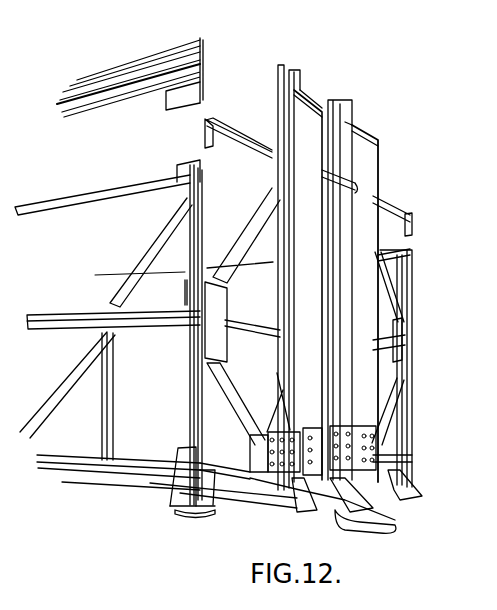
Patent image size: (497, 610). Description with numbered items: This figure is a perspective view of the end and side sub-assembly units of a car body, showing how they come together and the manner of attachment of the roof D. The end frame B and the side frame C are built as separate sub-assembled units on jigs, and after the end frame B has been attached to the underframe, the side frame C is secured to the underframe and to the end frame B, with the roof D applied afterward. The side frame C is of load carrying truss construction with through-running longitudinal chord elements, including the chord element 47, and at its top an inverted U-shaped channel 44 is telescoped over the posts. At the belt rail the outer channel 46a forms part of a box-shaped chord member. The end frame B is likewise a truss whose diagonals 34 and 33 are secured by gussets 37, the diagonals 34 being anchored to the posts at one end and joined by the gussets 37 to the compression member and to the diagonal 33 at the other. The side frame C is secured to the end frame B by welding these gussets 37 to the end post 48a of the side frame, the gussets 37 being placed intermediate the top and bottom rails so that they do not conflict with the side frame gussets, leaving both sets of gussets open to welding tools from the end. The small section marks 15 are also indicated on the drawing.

The inverted U-shaped channel 44 is at (123, 186).
The outer channel 46a is at (68, 330).
The longitudinal chord element 47 is at (38, 462).
The end post 48a is at (185, 292).
The gusset 37 is at (207, 350).
The diagonal 34 is at (238, 268).
The diagonal 33 is at (225, 398).
The section line 15 is at (420, 327).
The end frame B is at (378, 137).
The side frame C is at (179, 405).
The roof D is at (205, 55).